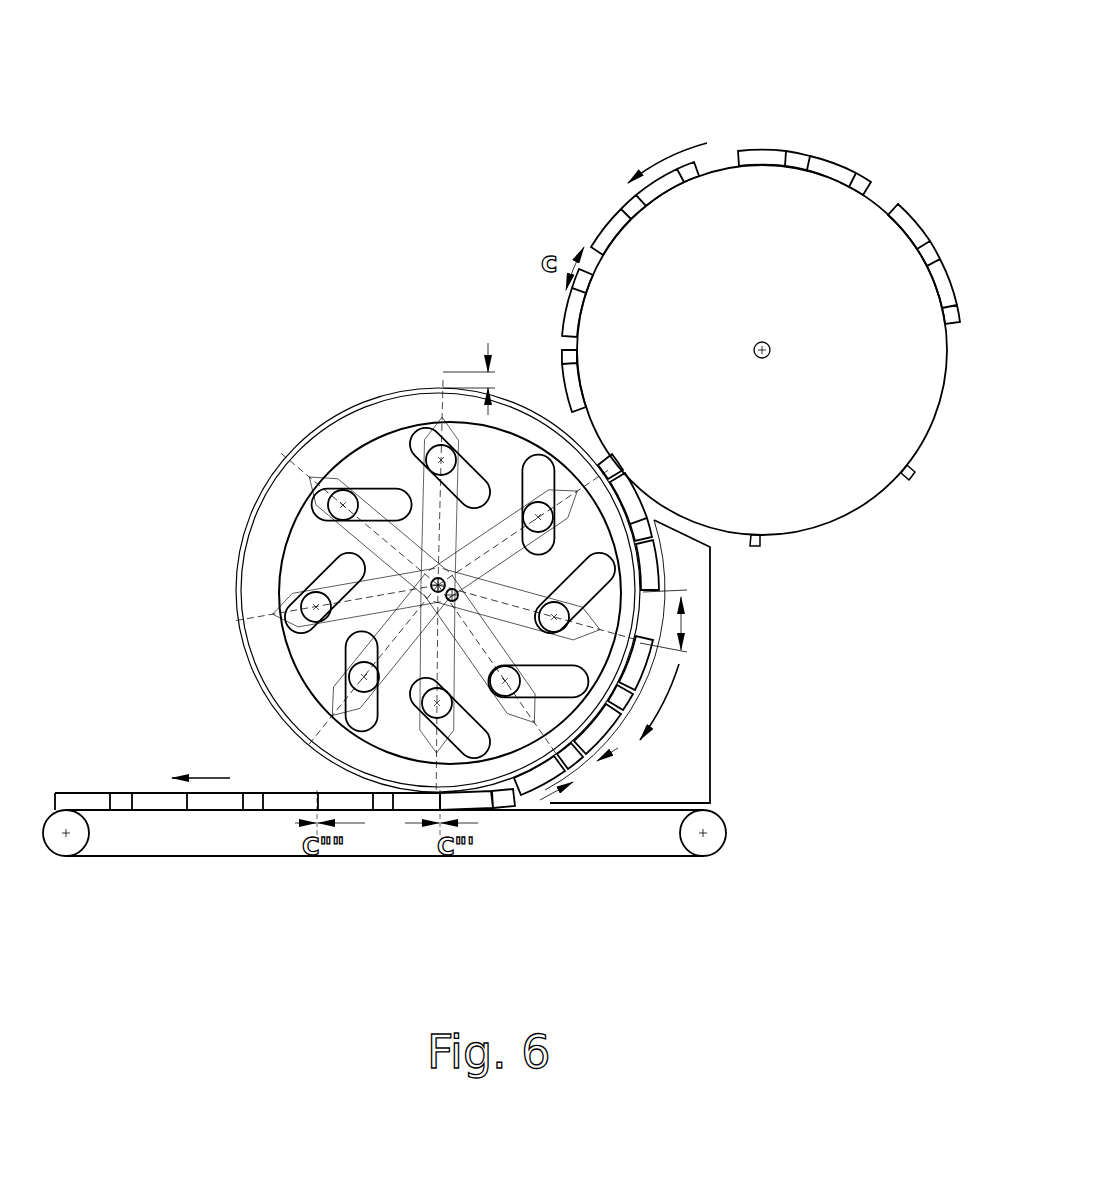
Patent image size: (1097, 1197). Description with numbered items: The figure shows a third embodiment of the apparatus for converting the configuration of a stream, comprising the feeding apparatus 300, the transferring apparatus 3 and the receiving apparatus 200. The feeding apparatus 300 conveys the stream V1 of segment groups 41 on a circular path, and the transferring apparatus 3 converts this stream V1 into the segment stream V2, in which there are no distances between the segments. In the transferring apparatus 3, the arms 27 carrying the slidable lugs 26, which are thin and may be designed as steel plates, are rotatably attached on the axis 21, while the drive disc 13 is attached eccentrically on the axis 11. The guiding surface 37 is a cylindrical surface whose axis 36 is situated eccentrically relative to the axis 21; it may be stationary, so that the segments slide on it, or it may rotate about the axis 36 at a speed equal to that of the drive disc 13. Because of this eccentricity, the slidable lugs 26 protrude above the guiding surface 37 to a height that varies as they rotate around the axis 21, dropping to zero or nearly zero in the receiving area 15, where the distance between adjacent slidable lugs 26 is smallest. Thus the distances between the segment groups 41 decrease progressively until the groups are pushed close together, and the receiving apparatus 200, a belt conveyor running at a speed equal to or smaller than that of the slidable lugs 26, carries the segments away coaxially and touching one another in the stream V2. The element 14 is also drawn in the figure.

The transferring apparatus 3 is at (418, 519).
The axis 11 is at (410, 628).
The drive disc 13 is at (389, 538).
The holding elements 14 is at (557, 396).
The receiving area 15 is at (505, 820).
The axis 21 is at (330, 528).
The slidable lugs 26 is at (443, 410).
The arms 27 is at (433, 422).
The axis 36 is at (428, 590).
The guiding surface 37 is at (340, 410).
The segment groups 41 is at (802, 137).
The receiving apparatus 200 is at (255, 866).
The feeding apparatus 300 is at (603, 117).
The stream V1 is at (582, 193).
The segment stream V2 is at (135, 773).